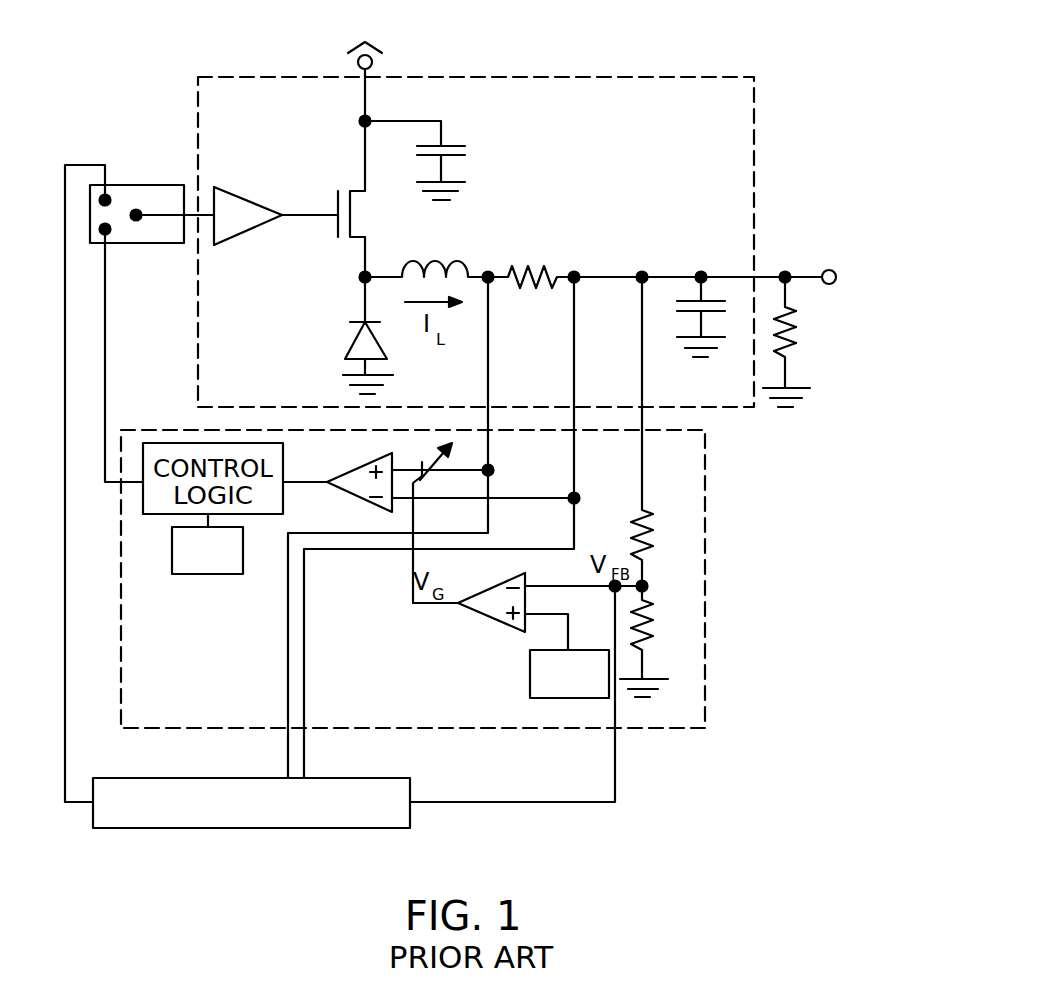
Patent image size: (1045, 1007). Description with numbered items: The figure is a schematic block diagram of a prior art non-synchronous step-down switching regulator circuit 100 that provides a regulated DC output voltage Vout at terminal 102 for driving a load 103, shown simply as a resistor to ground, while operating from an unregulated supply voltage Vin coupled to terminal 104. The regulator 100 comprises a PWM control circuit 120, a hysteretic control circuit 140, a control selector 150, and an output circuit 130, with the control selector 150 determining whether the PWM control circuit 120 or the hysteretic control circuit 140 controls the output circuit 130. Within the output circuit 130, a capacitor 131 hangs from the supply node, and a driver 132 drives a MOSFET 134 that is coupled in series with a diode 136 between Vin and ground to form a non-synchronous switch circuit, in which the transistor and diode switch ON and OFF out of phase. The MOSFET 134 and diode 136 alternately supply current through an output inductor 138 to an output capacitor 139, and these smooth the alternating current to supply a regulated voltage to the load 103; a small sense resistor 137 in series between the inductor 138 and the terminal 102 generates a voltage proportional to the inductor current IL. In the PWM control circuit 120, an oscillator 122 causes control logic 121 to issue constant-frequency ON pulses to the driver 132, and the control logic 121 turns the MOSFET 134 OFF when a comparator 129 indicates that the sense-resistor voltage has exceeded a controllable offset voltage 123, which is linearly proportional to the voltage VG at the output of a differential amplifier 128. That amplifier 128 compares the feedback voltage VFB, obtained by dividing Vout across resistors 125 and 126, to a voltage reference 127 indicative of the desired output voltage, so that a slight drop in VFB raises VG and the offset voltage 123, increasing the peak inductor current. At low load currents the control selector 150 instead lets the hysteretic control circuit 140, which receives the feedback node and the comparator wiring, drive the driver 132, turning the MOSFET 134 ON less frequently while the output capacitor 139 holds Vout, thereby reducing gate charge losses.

The switching regulator circuit 100 is at (790, 104).
The terminal 102 is at (830, 270).
The load 103 is at (797, 346).
The terminal 104 is at (373, 63).
The PWM control circuit 120 is at (705, 677).
The control logic 121 is at (318, 465).
The oscillator 122 is at (237, 575).
The controllable offset voltage 123 is at (428, 478).
The resistor 125 is at (655, 530).
The resistor 126 is at (653, 623).
The voltage reference 127 is at (530, 668).
The differential amplifier 128 is at (483, 617).
The comparator 129 is at (366, 503).
The output circuit 130 is at (550, 77).
The capacitor 131 is at (457, 152).
The driver 132 is at (233, 188).
The MOSFET 134 is at (351, 229).
The diode 136 is at (352, 340).
The resistor 137 is at (548, 278).
The inductor 138 is at (435, 248).
The capacitor 139 is at (677, 311).
The hysteretic control circuit 140 is at (412, 812).
The control selector 150 is at (176, 185).